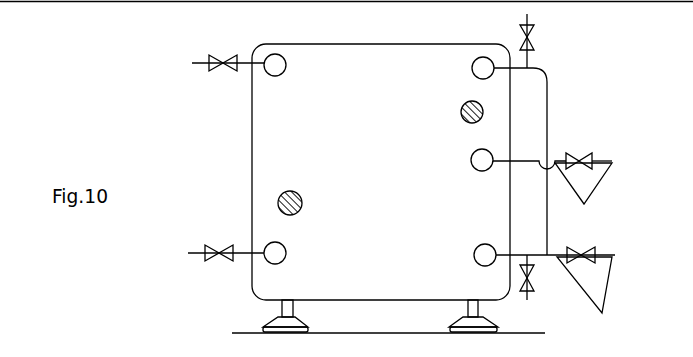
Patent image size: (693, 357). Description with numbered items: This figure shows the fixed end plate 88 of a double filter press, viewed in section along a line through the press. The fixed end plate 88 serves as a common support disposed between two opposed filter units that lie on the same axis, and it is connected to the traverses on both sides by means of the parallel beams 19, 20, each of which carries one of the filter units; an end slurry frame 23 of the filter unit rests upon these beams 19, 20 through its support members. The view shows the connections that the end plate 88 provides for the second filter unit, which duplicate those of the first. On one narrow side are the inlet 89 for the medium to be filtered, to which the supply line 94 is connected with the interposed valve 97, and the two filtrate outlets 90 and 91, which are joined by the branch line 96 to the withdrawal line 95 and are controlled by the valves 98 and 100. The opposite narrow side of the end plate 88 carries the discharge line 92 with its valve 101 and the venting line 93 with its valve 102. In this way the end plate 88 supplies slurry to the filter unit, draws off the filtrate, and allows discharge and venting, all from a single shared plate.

The beam 19 is at (463, 119).
The beam 20 is at (278, 205).
The end slurry frame 23 is at (610, 2).
The fixed end plate 88 is at (273, 163).
The inlet 89 is at (488, 162).
The outlet 90 is at (519, 254).
The outlet 91 is at (510, 69).
The discharge line 92 is at (278, 257).
The venting line 93 is at (277, 67).
The supply line 94 is at (583, 196).
The withdrawal line 95 is at (588, 297).
The branch line 96 is at (548, 100).
The valve 97 is at (578, 161).
The valve 98 is at (588, 253).
The valve 100 is at (530, 287).
The valve 101 is at (207, 258).
The valve 102 is at (222, 62).